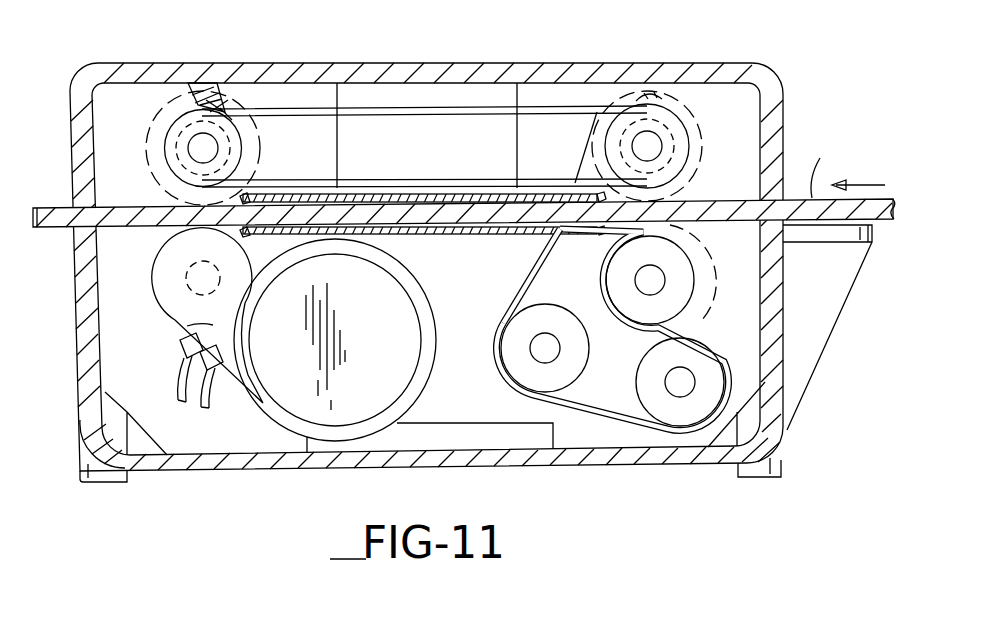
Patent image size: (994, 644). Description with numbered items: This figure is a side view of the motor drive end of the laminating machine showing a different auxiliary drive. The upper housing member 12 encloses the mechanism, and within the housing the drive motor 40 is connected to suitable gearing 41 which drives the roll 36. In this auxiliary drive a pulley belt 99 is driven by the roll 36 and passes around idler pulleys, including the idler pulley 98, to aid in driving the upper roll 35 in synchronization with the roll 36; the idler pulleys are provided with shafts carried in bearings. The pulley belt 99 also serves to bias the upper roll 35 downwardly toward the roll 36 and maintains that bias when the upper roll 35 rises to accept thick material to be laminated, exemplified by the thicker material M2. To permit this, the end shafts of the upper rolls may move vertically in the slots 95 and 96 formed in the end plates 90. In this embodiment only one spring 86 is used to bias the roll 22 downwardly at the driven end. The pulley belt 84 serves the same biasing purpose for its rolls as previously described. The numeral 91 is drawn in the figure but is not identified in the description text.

The upper housing member 12 is at (377, 62).
The roll 22 is at (262, 142).
The upper roll 35 is at (702, 152).
The roll 36 is at (714, 286).
The drive motor 40 is at (392, 350).
The gearing 41 is at (173, 323).
The pulley belt 84 is at (436, 106).
The spring 86 is at (196, 85).
The end plates 90 is at (480, 403).
The pulley 91 is at (583, 360).
The slot 95 is at (216, 106).
The slot 96 is at (650, 96).
The idler pulley 98 is at (660, 400).
The pulley belt 99 is at (533, 266).
The thicker material M2 is at (848, 167).